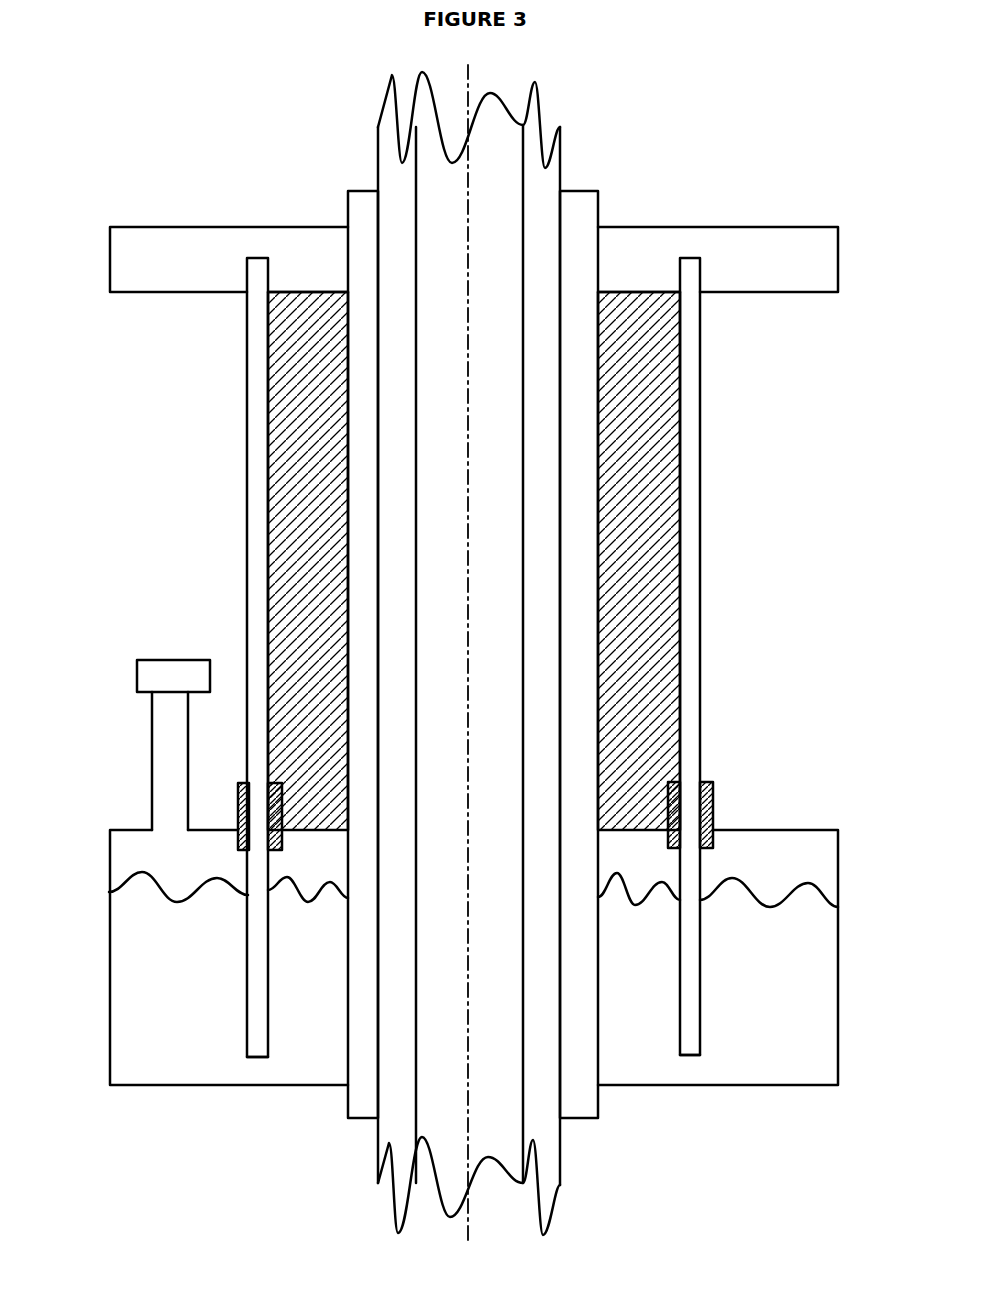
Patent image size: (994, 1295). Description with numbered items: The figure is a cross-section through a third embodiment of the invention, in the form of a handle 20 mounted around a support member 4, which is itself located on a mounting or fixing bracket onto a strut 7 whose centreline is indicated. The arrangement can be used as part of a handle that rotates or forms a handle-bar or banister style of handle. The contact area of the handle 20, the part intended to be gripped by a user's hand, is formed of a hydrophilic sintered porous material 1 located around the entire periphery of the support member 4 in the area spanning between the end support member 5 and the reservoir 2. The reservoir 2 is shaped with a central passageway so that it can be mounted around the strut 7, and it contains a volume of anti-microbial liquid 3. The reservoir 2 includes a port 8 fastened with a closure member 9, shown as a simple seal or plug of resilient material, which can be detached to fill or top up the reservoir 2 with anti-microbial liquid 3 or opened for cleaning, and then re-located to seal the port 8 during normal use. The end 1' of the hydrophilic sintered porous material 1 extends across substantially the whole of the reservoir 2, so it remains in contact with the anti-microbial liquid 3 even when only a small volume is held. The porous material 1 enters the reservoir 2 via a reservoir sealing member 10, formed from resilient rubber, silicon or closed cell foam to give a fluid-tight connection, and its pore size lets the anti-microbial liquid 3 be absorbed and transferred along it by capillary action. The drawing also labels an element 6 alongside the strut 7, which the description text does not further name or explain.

The hydrophilic sintered porous material 1 is at (503, 657).
The end of the hydrophilic sintered porous material 1' is at (499, 1127).
The reservoir 2 is at (108, 928).
The anti-microbial liquid 3 is at (175, 995).
The support member 4 is at (315, 493).
The end support member 5 is at (210, 268).
The outer tube 6 is at (353, 215).
The strut 7 is at (400, 193).
The port 8 is at (165, 768).
The closure member 9 is at (170, 675).
The reservoir sealing member 10 is at (240, 783).
The handle 20 is at (178, 1092).